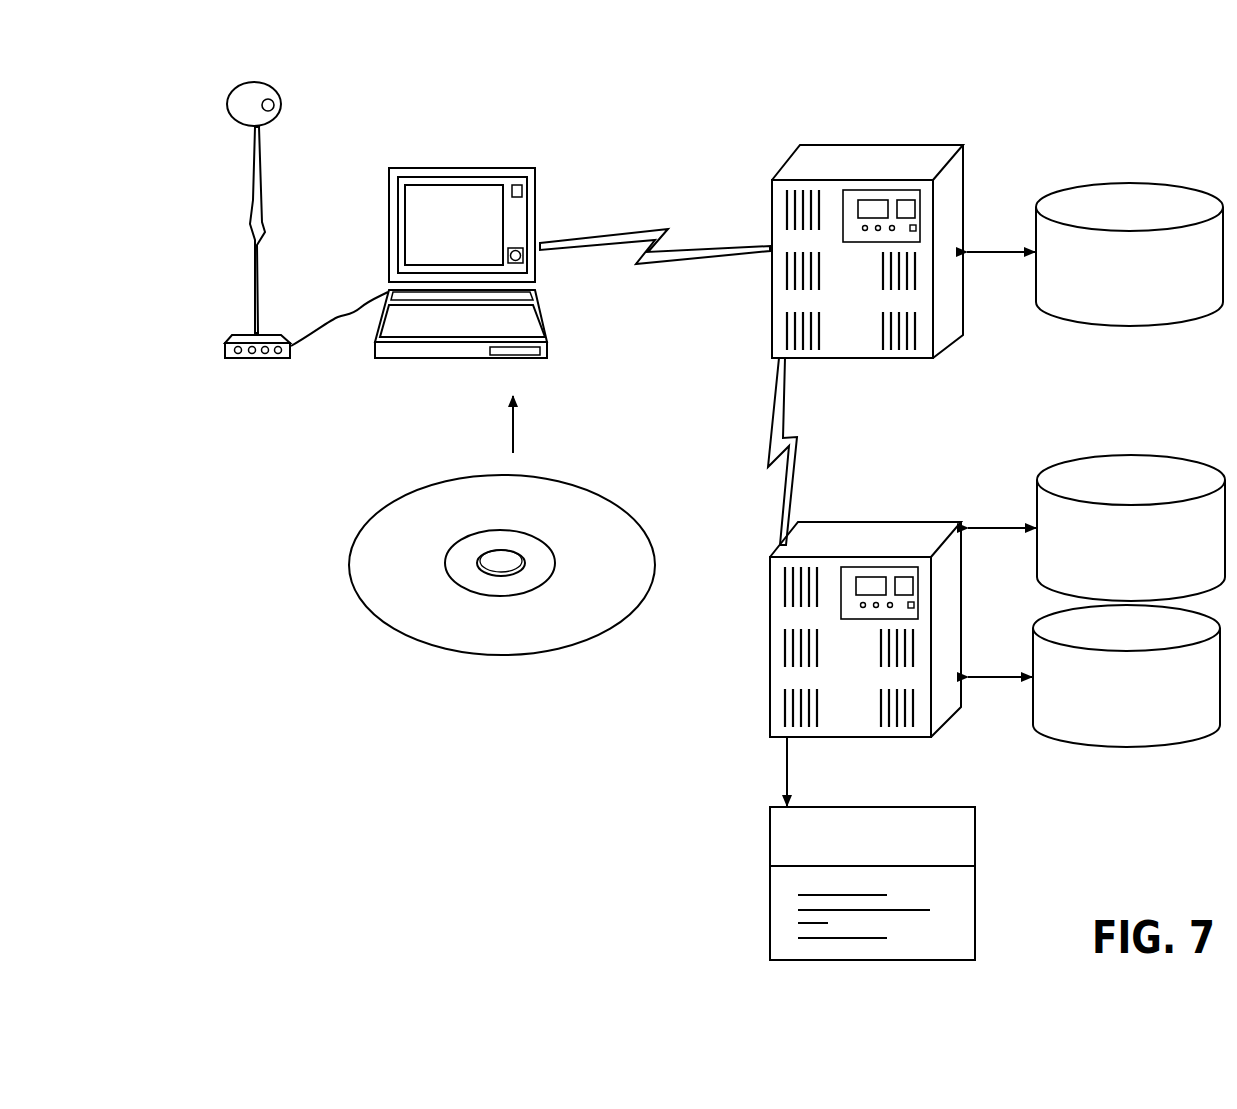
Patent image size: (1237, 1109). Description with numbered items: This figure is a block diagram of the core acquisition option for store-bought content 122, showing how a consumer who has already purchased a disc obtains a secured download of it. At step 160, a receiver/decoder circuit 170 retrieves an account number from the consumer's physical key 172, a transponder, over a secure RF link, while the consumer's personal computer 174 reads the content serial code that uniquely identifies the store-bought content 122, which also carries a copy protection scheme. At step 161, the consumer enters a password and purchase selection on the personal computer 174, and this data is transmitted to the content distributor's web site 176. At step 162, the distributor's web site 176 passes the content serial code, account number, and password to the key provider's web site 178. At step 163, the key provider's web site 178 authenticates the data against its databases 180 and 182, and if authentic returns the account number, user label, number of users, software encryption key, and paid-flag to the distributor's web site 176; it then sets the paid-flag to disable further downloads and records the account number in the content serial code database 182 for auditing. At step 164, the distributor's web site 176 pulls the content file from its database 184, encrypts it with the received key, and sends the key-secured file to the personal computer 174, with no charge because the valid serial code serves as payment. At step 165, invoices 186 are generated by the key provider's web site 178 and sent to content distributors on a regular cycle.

The store-bought content 122 is at (440, 650).
The step 160 is at (339, 300).
The step 161 is at (655, 211).
The step 162 is at (748, 451).
The step 163 is at (837, 478).
The step 164 is at (688, 300).
The step 165 is at (746, 776).
The receiver/decoder circuit 170 is at (257, 358).
The physical key 172 is at (282, 93).
The personal computer 174 is at (422, 360).
The content distributor's web site 176 is at (873, 360).
The key provider's web site 178 is at (900, 523).
The database 180 is at (1073, 460).
The content serial code database 182 is at (1197, 742).
The database 184 is at (1160, 323).
The invoices 186 is at (972, 877).